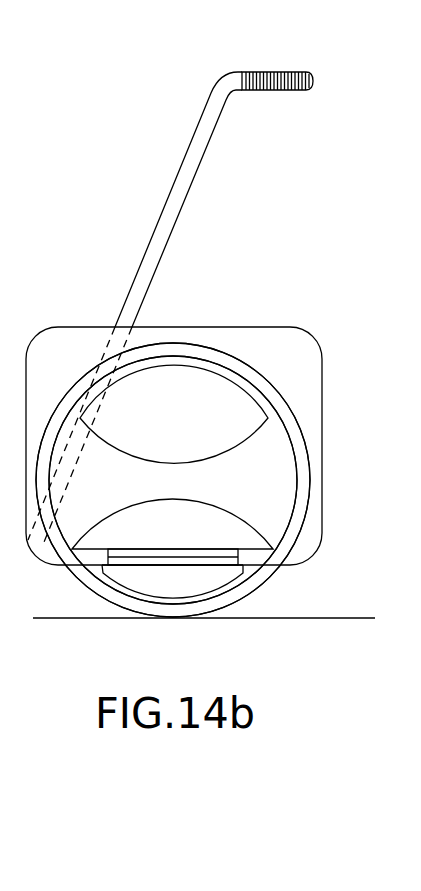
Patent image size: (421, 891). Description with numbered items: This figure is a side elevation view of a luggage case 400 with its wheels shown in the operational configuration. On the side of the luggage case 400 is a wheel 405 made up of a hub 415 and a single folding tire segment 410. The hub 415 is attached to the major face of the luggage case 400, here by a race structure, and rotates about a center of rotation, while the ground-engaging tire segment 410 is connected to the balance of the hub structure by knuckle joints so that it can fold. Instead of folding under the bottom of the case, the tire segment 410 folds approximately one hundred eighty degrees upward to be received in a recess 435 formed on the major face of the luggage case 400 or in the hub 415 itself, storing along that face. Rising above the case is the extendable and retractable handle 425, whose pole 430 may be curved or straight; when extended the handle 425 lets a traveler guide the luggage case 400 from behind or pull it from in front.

The luggage case 400 is at (292, 284).
The wheel 405 is at (302, 401).
The tire segment 410 is at (288, 532).
The hub 415 is at (277, 447).
The handle 425 is at (275, 72).
The pole 430 is at (162, 253).
The recess 435 is at (218, 518).